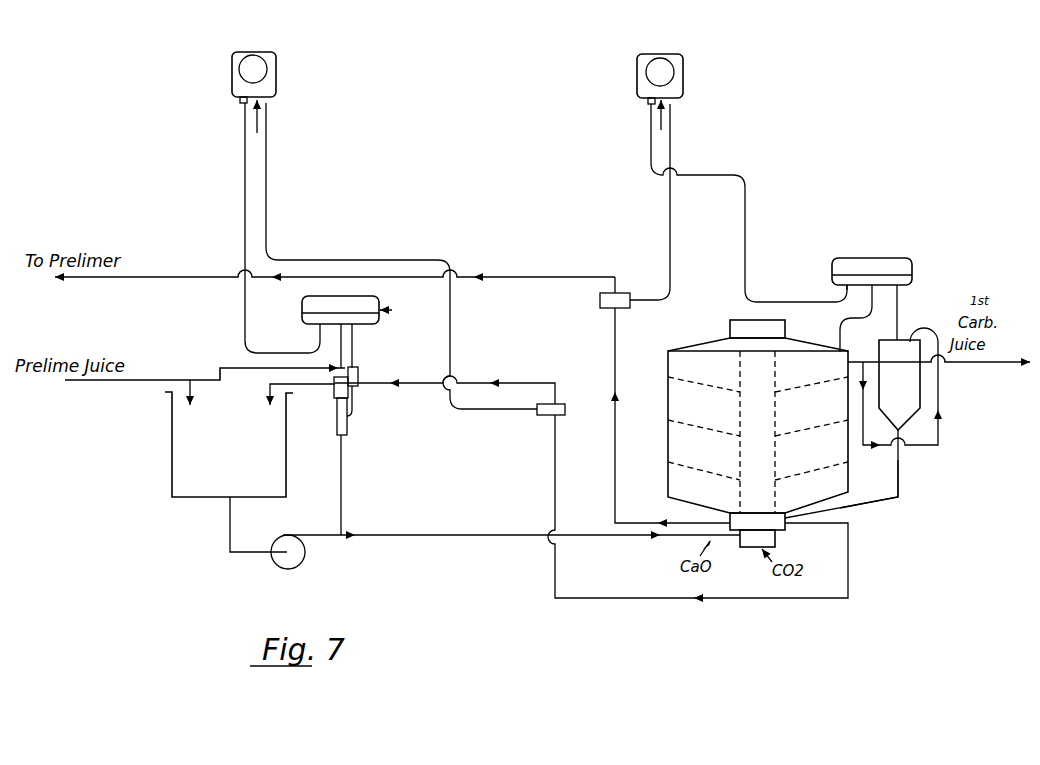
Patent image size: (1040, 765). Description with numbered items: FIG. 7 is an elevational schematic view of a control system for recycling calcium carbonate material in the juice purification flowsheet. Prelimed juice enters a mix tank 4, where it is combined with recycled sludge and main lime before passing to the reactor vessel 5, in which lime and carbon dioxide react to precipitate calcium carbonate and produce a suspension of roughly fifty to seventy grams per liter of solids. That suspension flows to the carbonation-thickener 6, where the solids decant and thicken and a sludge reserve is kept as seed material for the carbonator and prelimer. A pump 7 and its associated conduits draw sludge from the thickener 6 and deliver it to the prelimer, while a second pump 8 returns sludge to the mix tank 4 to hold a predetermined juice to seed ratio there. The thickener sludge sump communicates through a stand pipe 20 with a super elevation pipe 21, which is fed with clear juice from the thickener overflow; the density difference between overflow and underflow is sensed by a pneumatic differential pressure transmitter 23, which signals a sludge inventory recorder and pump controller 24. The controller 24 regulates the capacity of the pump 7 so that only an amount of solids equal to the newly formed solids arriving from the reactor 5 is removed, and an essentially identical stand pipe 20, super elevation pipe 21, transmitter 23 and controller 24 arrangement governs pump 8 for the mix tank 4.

The mix tank 4 is at (236, 448).
The reactor vessel 5 is at (763, 414).
The carbonation-thickener 6 is at (818, 464).
The pump 7 is at (615, 300).
The pump 8 is at (551, 409).
The stand pipe 20 is at (347, 426).
The super elevation pipe 21 is at (358, 374).
The pneumatic differential pressure transmitter 23 is at (933, 256).
The sludge inventory recorder and pump controller 24 is at (232, 84).